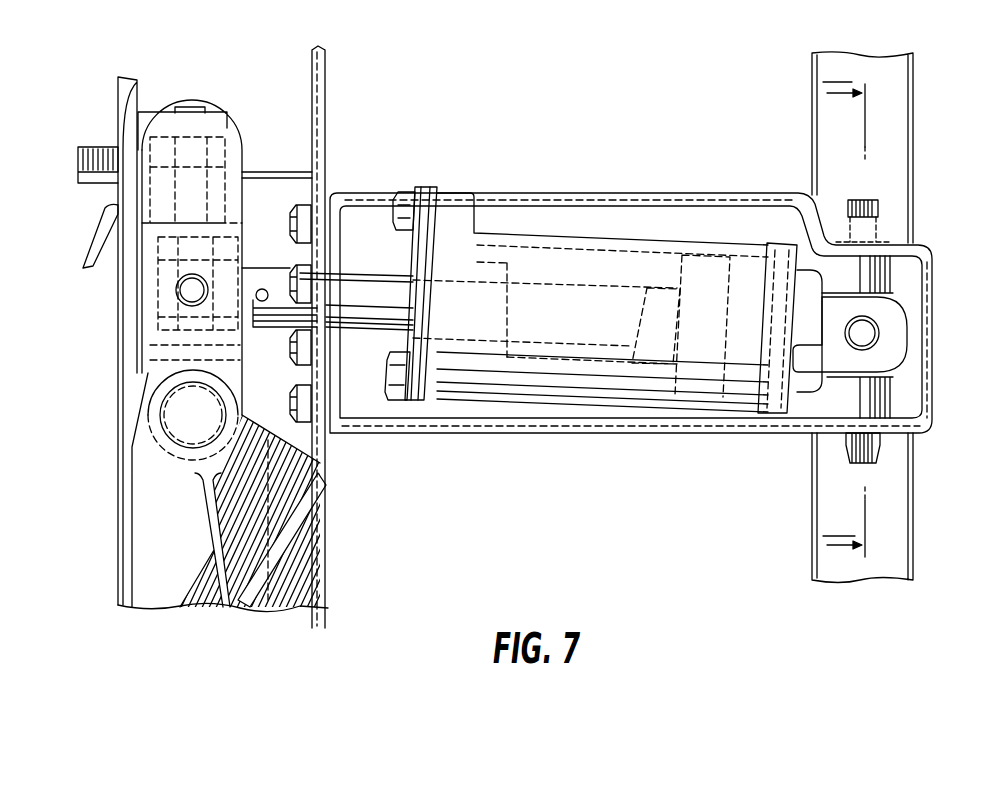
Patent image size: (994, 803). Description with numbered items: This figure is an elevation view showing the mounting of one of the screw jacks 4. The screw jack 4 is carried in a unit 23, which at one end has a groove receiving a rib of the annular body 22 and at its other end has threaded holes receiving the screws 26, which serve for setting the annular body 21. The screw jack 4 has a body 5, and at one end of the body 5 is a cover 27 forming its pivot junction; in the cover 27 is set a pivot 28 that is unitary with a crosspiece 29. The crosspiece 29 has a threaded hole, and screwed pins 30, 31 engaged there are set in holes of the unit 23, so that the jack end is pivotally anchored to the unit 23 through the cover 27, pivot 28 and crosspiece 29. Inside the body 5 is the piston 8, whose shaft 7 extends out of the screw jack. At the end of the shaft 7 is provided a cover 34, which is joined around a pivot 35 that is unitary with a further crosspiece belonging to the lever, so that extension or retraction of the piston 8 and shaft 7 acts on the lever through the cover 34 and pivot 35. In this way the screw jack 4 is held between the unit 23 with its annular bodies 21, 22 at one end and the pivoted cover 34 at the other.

The screw jack 4 is at (578, 228).
The body 5 is at (630, 238).
The shaft 7 is at (620, 308).
The piston 8 is at (703, 268).
The annular body 21 is at (318, 140).
The annular body 22 is at (812, 481).
The unit 23 is at (520, 195).
The screws 26 is at (298, 200).
The cover 27 is at (887, 327).
The pivot 28 is at (862, 333).
The crosspiece 29 is at (903, 355).
The screwed pin 30 is at (879, 210).
The screwed pin 31 is at (878, 453).
The cover 34 is at (248, 273).
The pivot 35 is at (202, 245).